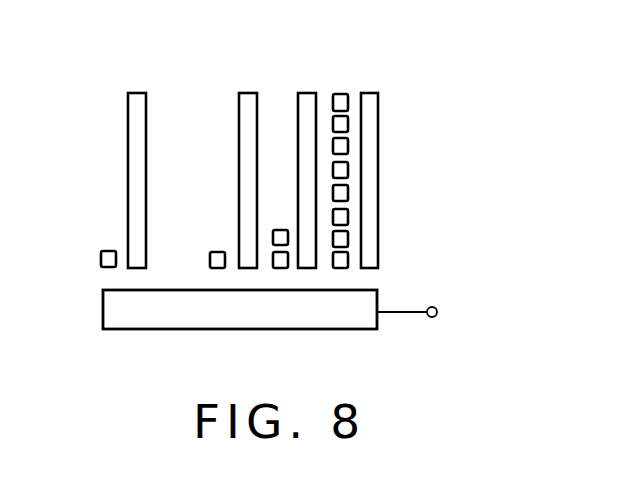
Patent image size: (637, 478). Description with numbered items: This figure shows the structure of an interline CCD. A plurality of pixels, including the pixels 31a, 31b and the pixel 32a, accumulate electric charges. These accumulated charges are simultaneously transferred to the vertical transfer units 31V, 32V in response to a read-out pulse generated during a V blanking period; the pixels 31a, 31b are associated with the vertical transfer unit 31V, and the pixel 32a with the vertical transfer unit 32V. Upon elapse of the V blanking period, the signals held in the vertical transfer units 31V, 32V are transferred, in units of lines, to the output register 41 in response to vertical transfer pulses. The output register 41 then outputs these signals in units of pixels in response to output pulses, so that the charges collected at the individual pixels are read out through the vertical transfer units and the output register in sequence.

The vertical transfer unit 32V is at (317, 94).
The vertical transfer unit 31V is at (368, 117).
The pixel 31b is at (348, 234).
The pixel 31a is at (348, 259).
The pixel 32a is at (279, 268).
The output register 41 is at (367, 307).